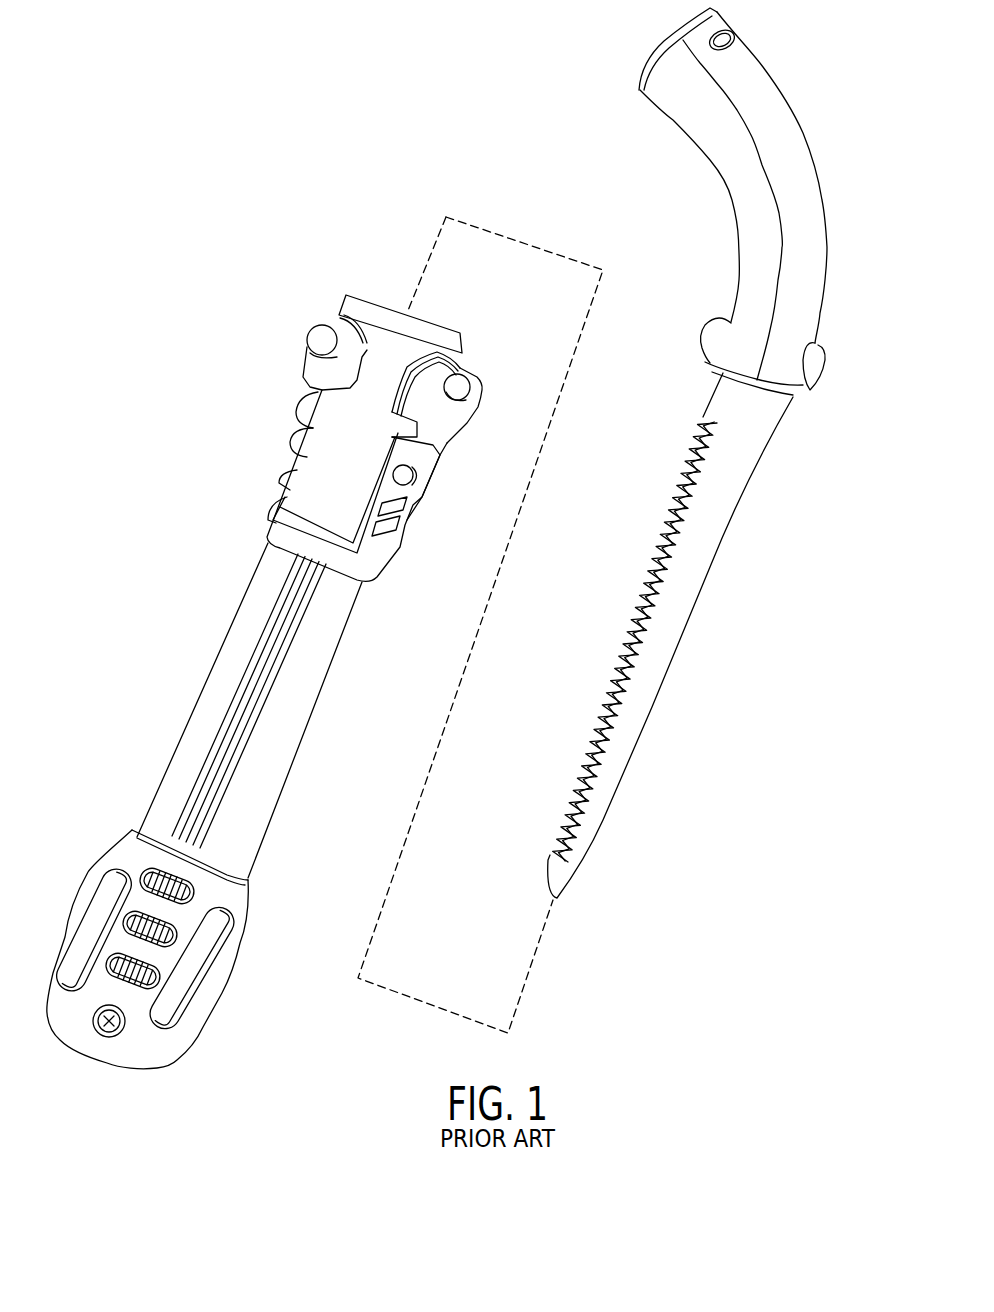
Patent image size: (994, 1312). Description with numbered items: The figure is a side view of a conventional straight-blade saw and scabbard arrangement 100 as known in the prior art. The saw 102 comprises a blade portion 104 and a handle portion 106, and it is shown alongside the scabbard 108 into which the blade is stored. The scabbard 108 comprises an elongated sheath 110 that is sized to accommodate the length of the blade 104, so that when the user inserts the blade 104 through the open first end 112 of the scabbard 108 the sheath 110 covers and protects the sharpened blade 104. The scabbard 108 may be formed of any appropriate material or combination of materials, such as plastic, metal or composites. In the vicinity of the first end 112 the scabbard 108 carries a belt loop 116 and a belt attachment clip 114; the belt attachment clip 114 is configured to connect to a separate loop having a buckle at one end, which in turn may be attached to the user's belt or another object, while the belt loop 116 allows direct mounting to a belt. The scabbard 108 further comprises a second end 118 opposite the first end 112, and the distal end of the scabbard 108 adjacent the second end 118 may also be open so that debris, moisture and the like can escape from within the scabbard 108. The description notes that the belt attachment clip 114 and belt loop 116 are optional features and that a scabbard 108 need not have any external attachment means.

The straight-blade saw and scabbard arrangement 100 is at (452, 97).
The saw 102 is at (776, 541).
The blade portion 104 is at (630, 628).
The handle portion 106 is at (737, 229).
The scabbard 108 is at (158, 600).
The elongated sheath 110 is at (290, 713).
The open first end 112 is at (466, 370).
The belt attachment clip 114 is at (365, 297).
The belt loop 116 is at (297, 437).
The second end 118 is at (222, 977).